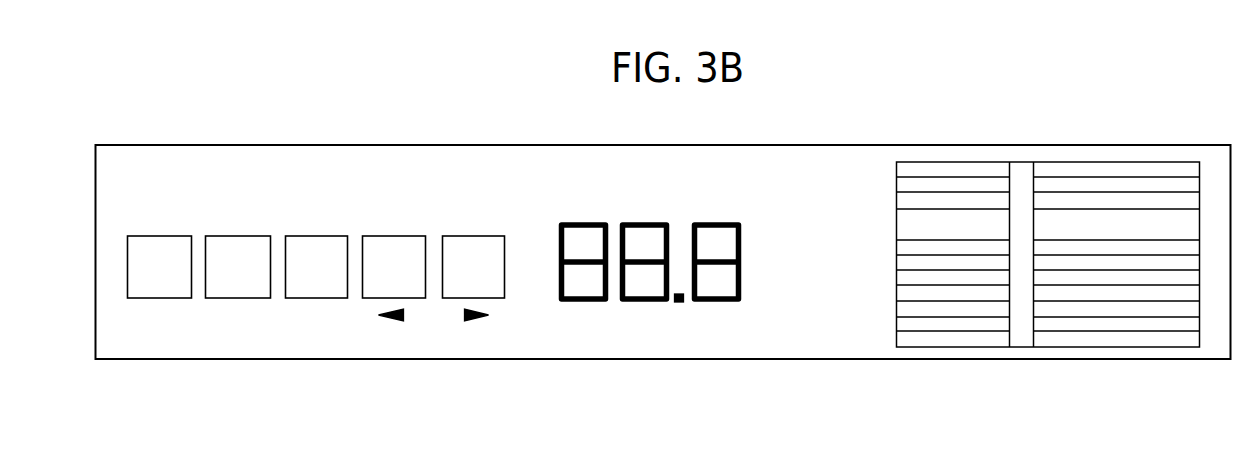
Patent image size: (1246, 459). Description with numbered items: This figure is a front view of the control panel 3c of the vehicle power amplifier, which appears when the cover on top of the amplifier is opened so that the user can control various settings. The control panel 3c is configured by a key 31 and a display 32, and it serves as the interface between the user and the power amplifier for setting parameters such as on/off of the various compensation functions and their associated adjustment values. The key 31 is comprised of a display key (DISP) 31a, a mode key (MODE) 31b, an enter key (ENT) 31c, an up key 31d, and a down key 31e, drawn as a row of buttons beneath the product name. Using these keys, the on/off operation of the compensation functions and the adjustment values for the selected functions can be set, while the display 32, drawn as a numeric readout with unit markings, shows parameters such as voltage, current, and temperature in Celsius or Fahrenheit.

The control panel 3c is at (826, 129).
The key 31 is at (325, 326).
The display key (DISP) 31a is at (143, 233).
The mode key (MODE) 31b is at (222, 233).
The enter key (ENT) 31c is at (302, 233).
The up key 31d is at (483, 263).
The down key 31e is at (380, 233).
The display 32 is at (800, 372).